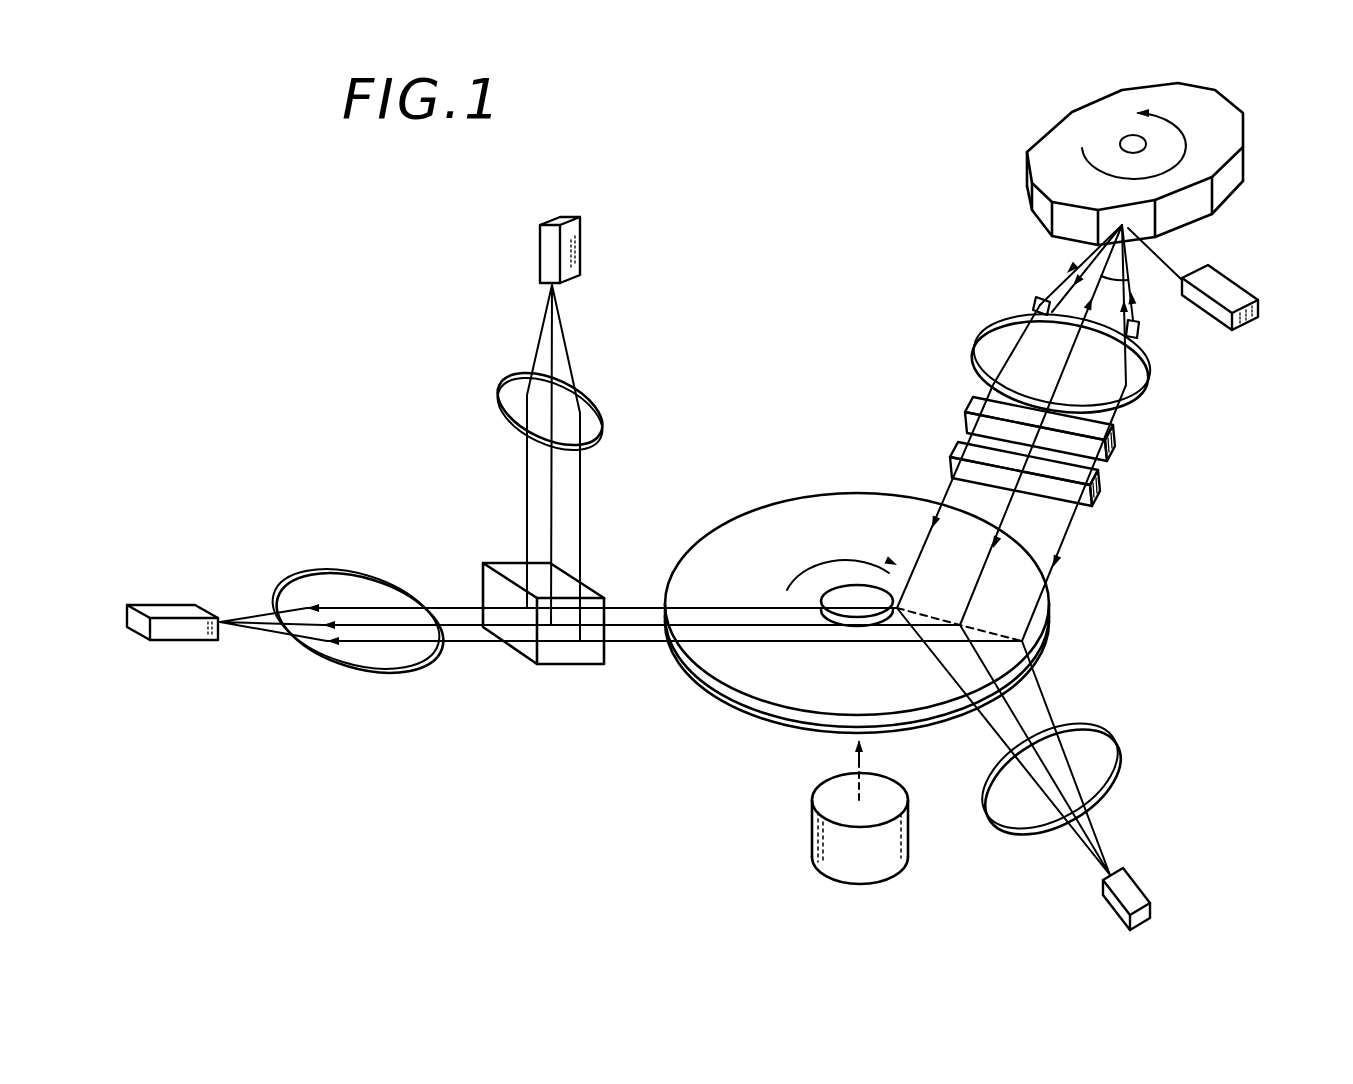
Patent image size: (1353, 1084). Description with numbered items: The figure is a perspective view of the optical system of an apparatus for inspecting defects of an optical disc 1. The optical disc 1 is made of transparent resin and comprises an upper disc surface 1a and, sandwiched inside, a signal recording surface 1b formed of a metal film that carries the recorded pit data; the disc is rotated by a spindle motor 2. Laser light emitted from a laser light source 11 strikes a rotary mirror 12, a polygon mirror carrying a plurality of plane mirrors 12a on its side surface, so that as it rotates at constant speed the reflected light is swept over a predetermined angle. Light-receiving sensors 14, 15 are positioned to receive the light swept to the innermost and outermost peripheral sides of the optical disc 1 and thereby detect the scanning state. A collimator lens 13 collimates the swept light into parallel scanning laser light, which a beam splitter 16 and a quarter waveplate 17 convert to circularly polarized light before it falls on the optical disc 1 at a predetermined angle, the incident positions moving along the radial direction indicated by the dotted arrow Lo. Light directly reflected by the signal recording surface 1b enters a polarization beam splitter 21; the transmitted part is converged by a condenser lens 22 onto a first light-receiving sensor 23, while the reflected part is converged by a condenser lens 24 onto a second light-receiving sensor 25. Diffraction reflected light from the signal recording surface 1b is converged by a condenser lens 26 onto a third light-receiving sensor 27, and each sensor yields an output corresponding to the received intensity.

The optical disc 1 is at (792, 497).
The upper disc surface 1a is at (715, 553).
The signal recording surface 1b is at (720, 697).
The spindle motor 2 is at (910, 833).
The laser light source 11 is at (1245, 327).
The rotary mirror 12 is at (1243, 105).
The plane mirror 12a is at (1190, 208).
The collimator lens 13 is at (1143, 393).
The light-receiving sensor 14 is at (1030, 300).
The light-receiving sensor 15 is at (1143, 330).
The beam splitter 16 is at (960, 410).
The quarter waveplate 17 is at (1100, 493).
The polarization beam splitter 21 is at (558, 666).
The condenser lens 22 is at (393, 672).
The first light-receiving sensor 23 is at (186, 643).
The condenser lens 24 is at (603, 424).
The second light-receiving sensor 25 is at (582, 238).
The condenser lens 26 is at (1125, 735).
The third light-receiving sensor 27 is at (1140, 886).
The radial direction Lo is at (983, 630).